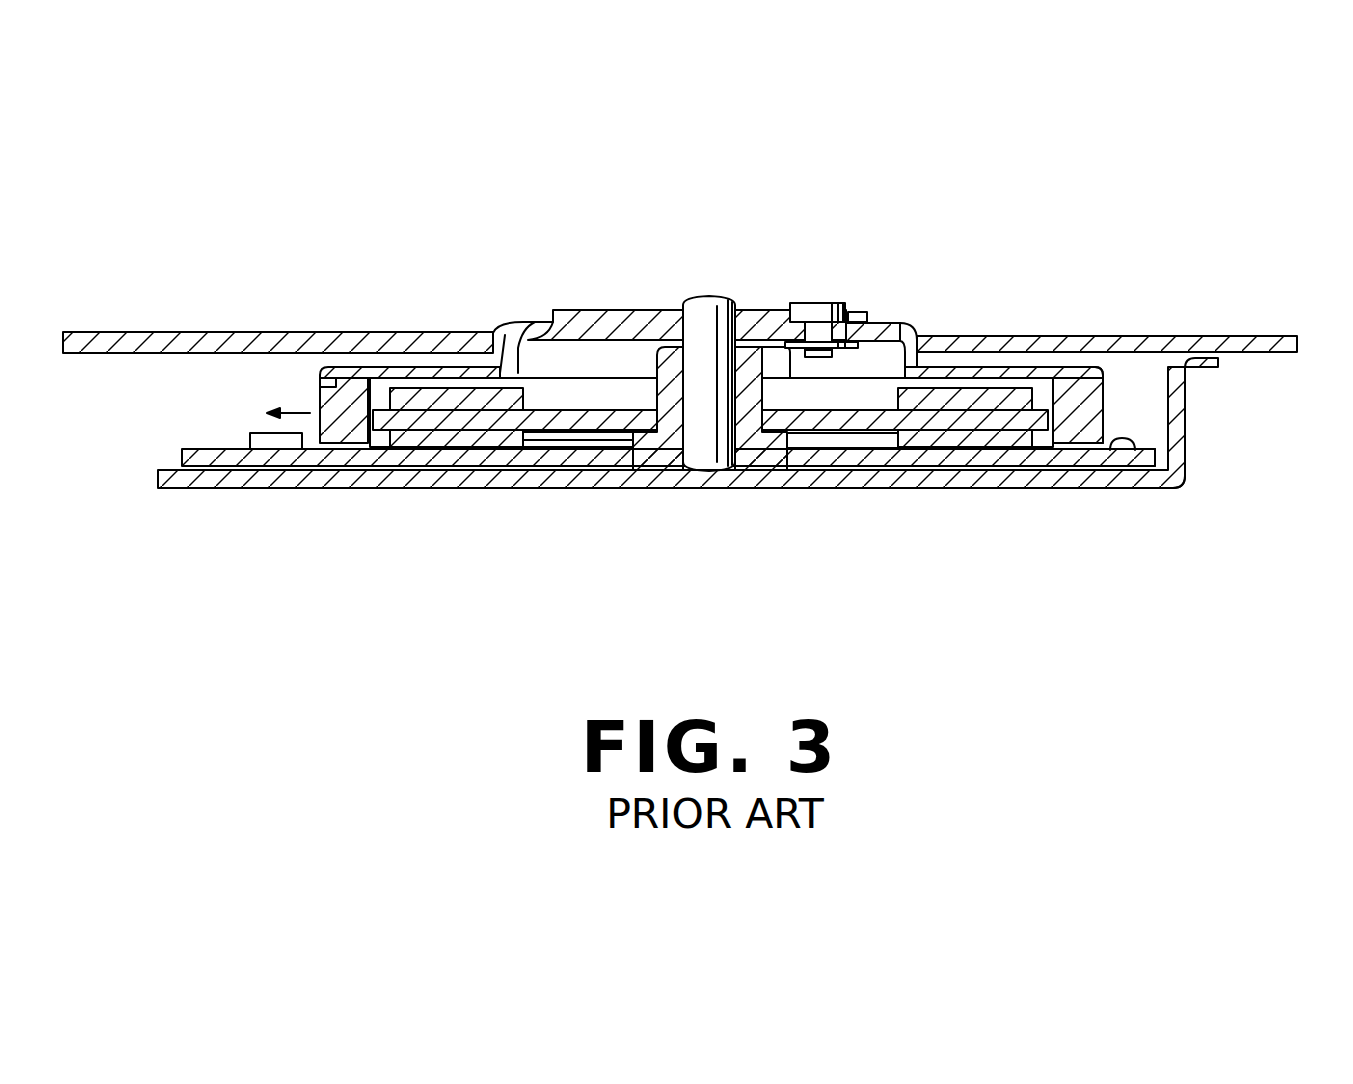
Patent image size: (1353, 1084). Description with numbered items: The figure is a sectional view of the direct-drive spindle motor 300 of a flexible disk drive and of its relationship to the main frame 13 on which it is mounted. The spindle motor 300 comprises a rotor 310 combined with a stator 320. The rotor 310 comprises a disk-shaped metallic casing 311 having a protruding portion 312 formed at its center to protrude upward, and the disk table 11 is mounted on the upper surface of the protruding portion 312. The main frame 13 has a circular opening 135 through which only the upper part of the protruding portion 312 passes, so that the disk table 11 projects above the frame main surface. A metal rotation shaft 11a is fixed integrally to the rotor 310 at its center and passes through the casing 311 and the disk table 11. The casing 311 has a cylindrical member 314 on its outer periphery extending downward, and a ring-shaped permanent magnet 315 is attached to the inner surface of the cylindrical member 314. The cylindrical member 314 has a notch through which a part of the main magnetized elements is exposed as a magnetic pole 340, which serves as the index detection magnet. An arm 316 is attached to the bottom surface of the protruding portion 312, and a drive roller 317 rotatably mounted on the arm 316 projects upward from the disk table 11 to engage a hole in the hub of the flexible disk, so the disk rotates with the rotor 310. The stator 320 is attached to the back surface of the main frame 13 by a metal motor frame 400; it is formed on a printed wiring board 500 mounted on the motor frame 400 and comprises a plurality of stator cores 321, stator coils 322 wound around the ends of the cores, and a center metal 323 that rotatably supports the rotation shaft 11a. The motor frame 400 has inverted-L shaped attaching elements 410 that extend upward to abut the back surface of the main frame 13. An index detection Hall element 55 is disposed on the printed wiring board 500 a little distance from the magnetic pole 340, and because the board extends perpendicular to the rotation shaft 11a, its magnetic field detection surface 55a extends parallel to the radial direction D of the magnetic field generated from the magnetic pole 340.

The disk table 11 is at (610, 308).
The rotation shaft 11a is at (710, 305).
The main frame 13 is at (1063, 336).
The index detection Hall element 55 is at (274, 445).
The magnetic field detection surface 55a is at (260, 433).
The circular opening 135 is at (915, 338).
The spindle motor 300 is at (543, 489).
The rotor 310 is at (1072, 447).
The casing 311 is at (412, 372).
The protruding portion 312 is at (520, 321).
The cylindrical member 314 is at (1107, 390).
The permanent magnet 315 is at (346, 378).
The arm 316 is at (781, 388).
The drive roller 317 is at (818, 303).
The stator 320 is at (598, 438).
The stator core 321 is at (407, 437).
The stator coil 322 is at (458, 443).
The center metal 323 is at (660, 455).
The magnetic pole 340 is at (318, 400).
The motor frame 400 is at (985, 466).
The attaching element 410 is at (1185, 440).
The printed wiring board 500 is at (1133, 488).
The direction of magnetic field D is at (300, 413).